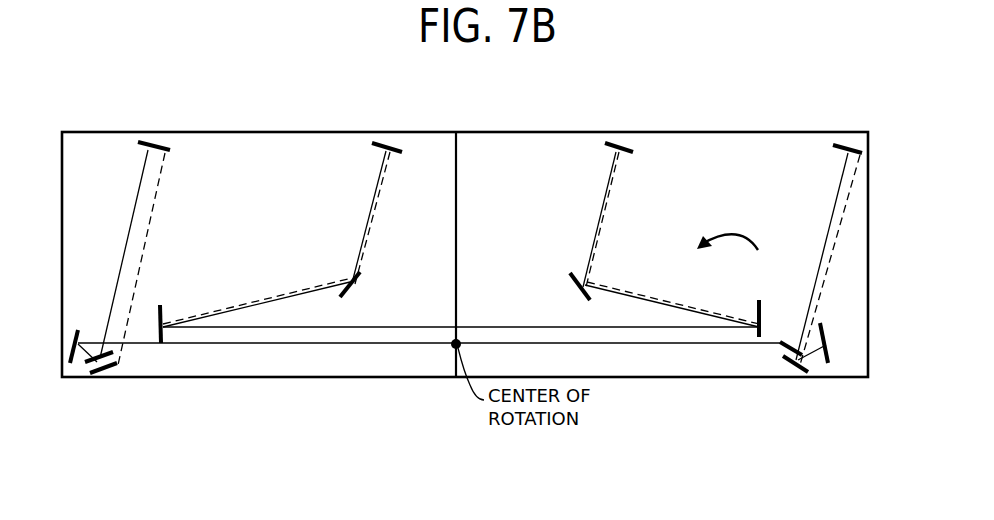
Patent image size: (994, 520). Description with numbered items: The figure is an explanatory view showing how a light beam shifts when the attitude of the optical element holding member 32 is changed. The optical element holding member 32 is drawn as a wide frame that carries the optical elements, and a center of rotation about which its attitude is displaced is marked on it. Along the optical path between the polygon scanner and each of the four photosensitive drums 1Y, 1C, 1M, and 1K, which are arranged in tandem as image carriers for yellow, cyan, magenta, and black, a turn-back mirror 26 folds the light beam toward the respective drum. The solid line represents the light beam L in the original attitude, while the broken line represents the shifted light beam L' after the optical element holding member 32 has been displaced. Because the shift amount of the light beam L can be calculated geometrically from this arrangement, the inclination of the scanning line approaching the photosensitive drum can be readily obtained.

The photosensitive drum (yellow) 1Y is at (142, 143).
The photosensitive drum (cyan) 1C is at (383, 147).
The photosensitive drum (magenta) 1M is at (617, 147).
The photosensitive drum (black) 1K is at (846, 149).
The turn-back mirror 26 is at (355, 291).
The optical element holding member 32 is at (868, 237).
The light beam L is at (124, 254).
The shifted light beam L' is at (153, 259).